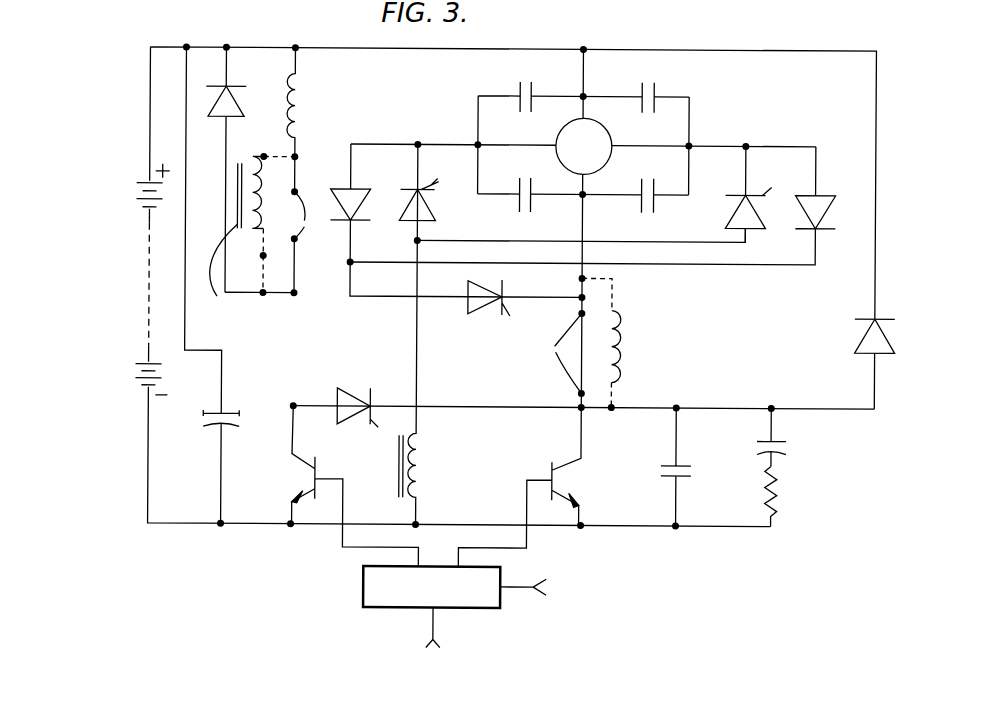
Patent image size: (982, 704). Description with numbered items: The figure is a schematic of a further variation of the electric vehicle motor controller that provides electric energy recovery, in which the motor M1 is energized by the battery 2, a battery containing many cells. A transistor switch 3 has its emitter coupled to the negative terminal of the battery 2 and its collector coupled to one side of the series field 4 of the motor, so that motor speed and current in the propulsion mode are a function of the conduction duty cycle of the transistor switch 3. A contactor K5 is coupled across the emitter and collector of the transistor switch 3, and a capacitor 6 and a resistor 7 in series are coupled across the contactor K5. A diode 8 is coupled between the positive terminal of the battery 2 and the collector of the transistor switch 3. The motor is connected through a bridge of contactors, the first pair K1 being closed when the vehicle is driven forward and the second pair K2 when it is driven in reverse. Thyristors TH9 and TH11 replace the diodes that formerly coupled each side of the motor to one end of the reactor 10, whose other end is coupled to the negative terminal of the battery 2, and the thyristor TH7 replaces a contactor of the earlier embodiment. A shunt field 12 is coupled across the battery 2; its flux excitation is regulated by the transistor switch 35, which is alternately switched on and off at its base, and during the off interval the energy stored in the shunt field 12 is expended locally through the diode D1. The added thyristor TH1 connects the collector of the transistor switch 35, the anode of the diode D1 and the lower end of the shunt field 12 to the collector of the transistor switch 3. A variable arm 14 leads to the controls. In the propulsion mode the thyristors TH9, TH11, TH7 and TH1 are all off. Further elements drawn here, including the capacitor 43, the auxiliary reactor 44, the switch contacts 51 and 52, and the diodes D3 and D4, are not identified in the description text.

The battery 2 is at (148, 326).
The transistor switch 3 is at (551, 470).
The series field 4 is at (614, 339).
The capacitor 6 is at (784, 441).
The resistor 7 is at (779, 493).
The diode 8 is at (863, 318).
The reactor 10 is at (424, 450).
The shunt field 12 is at (288, 92).
The variable arm 14 is at (352, 549).
The transistor switch 35 is at (322, 467).
The capacitor 43 is at (212, 427).
The auxiliary D.C. reactor 44 is at (262, 200).
The switch contact 51 is at (309, 205).
The switch contact 52 is at (270, 156).
The diode D1 is at (218, 122).
The diode D3 is at (363, 188).
The diode D4 is at (828, 207).
The thyristor TH1 is at (338, 392).
The thyristor TH7 is at (482, 314).
The thyristor TH9 is at (430, 211).
The thyristor TH11 is at (734, 211).
The contactors K1 is at (653, 188).
The contactors K2 is at (655, 92).
The contactor K5 is at (666, 478).
The motor M1 is at (584, 145).